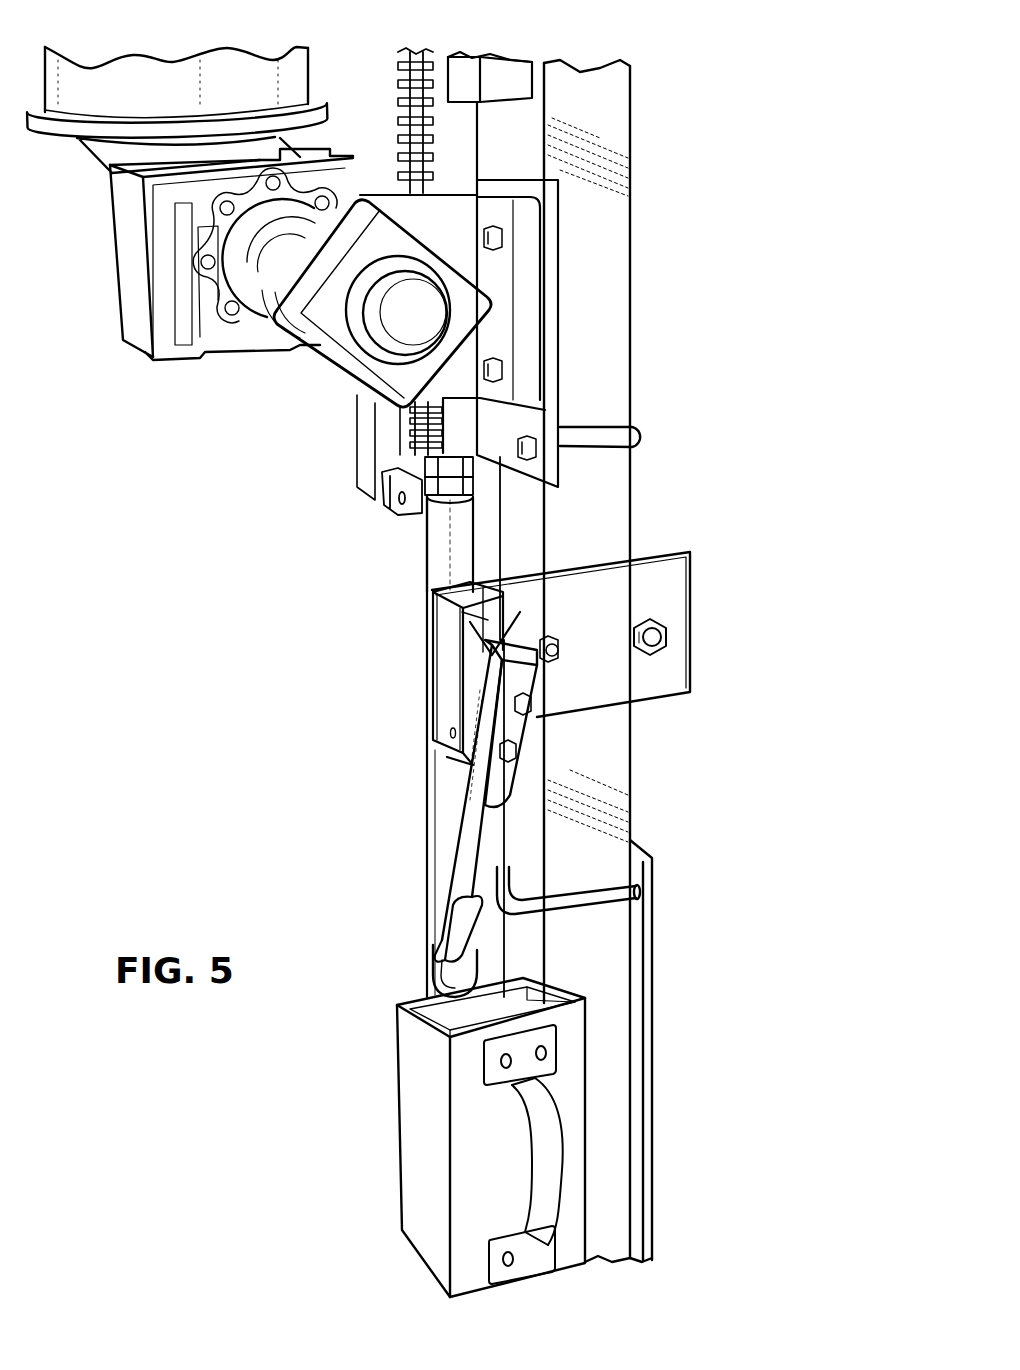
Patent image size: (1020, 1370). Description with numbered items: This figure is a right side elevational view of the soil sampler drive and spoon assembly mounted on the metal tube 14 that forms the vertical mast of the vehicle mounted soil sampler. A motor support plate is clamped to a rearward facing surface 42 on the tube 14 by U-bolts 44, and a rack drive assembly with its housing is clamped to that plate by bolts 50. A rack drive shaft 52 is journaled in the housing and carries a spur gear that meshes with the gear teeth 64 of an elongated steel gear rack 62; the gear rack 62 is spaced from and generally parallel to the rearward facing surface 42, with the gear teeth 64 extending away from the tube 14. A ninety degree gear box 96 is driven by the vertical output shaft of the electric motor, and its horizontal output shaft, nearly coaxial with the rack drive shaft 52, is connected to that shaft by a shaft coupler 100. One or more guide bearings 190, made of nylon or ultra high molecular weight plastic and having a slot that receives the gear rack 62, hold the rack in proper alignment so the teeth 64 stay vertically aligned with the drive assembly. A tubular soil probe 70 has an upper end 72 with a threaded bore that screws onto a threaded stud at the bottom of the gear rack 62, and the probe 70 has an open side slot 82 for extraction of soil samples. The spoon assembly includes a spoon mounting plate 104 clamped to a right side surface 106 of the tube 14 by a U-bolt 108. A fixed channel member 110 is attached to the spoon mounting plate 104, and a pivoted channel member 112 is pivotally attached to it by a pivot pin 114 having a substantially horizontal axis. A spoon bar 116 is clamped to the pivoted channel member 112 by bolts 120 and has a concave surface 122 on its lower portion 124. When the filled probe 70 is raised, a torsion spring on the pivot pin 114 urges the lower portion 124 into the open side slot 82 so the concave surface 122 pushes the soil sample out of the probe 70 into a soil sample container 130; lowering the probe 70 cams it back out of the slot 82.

The metal tube 14 is at (631, 346).
The rearward facing surface 42 is at (533, 537).
The U-bolts 44 is at (612, 440).
The bolts 50 is at (507, 247).
The rack drive shaft 52 is at (410, 342).
The gear rack 62 is at (388, 238).
The gear teeth 64 is at (400, 62).
The tubular soil probe 70 is at (433, 557).
The upper end 72 is at (440, 495).
The open side slot 82 is at (442, 817).
The ninety degree gear box 96 is at (157, 360).
The shaft coupler 100 is at (273, 290).
The spoon mounting plate 104 is at (685, 575).
The right side surface 106 is at (620, 98).
The U-bolt 108 is at (667, 638).
The fixed channel member 110 is at (445, 633).
The pivoted channel member 112 is at (478, 643).
The pivot pin 114 is at (437, 735).
The spoon bar 116 is at (452, 915).
The bolts 120 is at (537, 733).
The concave surface 122 is at (440, 935).
The lower portion 124 is at (458, 933).
The soil sample container 130 is at (410, 1182).
The guide bearing 190 is at (515, 68).